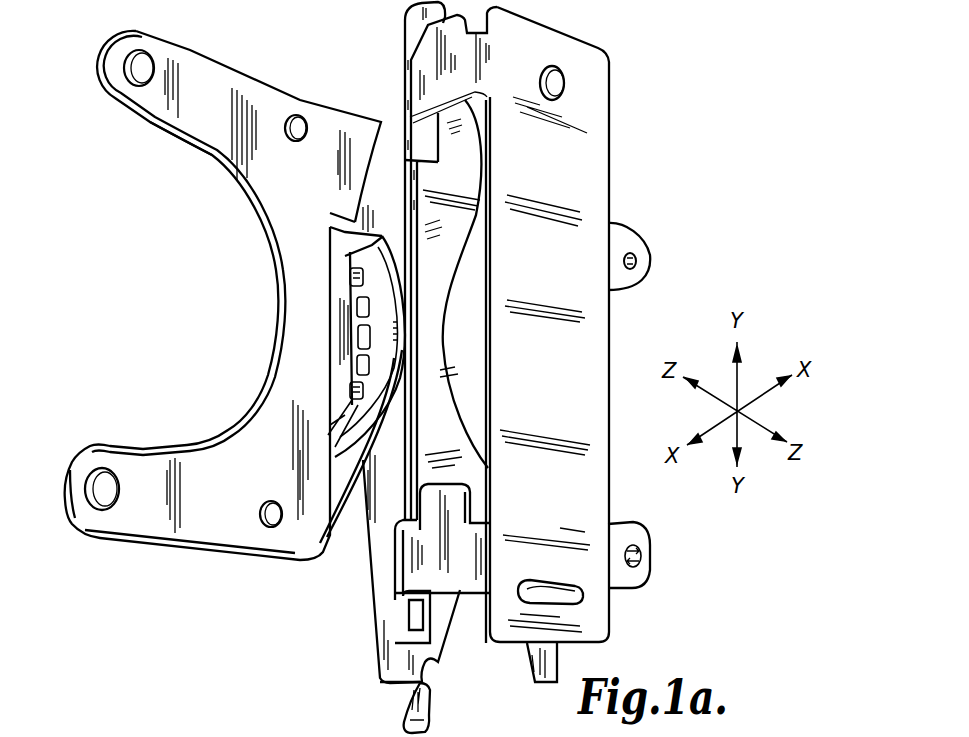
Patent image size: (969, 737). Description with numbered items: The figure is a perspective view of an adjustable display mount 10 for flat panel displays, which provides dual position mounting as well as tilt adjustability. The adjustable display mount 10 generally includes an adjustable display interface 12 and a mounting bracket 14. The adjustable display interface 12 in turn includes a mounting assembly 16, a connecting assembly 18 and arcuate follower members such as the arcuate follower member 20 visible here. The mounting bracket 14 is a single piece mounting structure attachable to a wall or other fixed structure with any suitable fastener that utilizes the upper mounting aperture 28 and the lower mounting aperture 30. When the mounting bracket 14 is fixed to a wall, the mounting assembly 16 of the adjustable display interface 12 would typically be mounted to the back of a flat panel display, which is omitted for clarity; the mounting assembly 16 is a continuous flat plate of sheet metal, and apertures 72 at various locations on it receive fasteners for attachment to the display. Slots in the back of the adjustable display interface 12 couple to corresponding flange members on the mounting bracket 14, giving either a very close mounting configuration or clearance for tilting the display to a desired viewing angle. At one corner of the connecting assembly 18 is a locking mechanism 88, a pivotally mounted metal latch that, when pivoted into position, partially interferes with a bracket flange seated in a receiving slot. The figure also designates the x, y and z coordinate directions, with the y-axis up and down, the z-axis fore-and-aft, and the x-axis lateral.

The adjustable display mount 10 is at (272, 648).
The adjustable display interface 12 is at (228, 56).
The mounting bracket 14 is at (630, 137).
The mounting assembly 16 is at (160, 128).
The connecting assembly 18 is at (383, 122).
The arcuate follower member 20 is at (352, 278).
The upper mounting aperture 28 is at (561, 76).
The lower mounting aperture 30 is at (582, 597).
The aperture 72 is at (105, 505).
The locking mechanism 88 is at (432, 712).